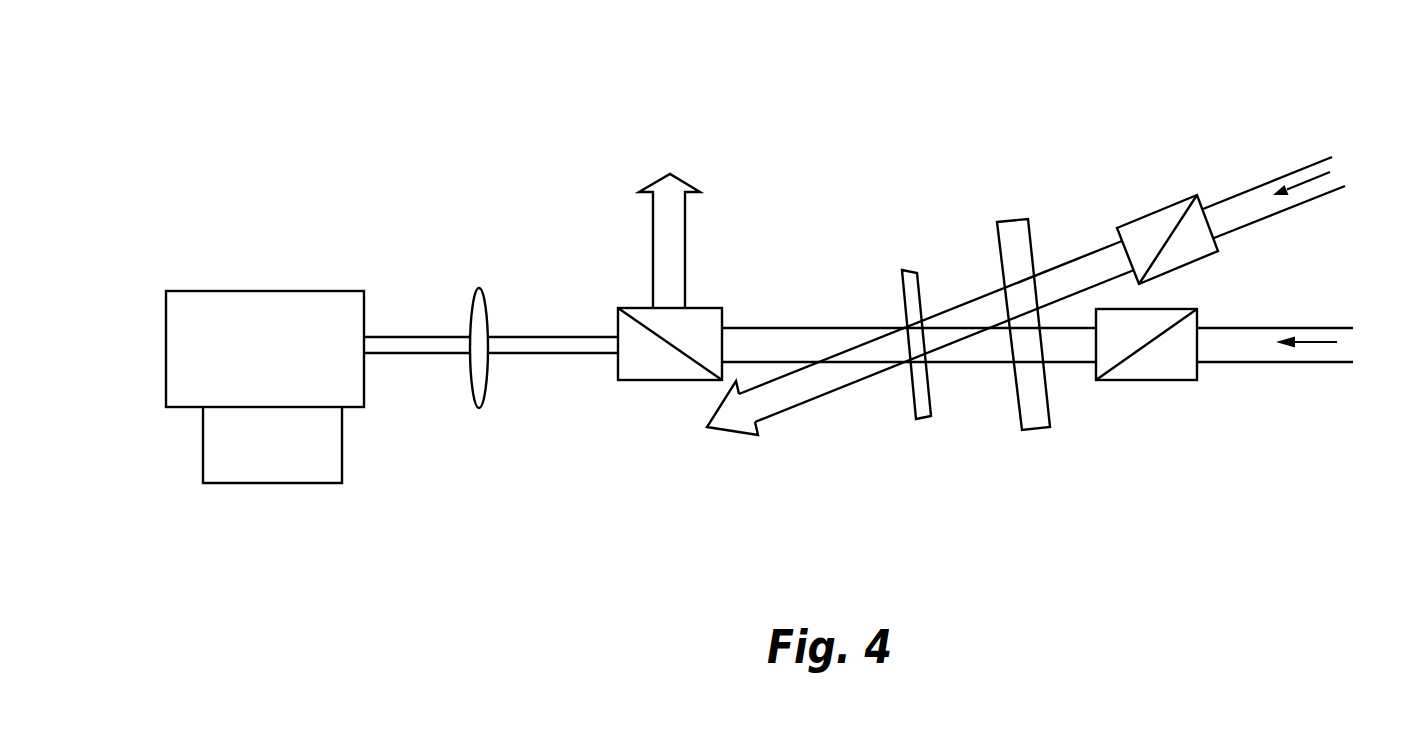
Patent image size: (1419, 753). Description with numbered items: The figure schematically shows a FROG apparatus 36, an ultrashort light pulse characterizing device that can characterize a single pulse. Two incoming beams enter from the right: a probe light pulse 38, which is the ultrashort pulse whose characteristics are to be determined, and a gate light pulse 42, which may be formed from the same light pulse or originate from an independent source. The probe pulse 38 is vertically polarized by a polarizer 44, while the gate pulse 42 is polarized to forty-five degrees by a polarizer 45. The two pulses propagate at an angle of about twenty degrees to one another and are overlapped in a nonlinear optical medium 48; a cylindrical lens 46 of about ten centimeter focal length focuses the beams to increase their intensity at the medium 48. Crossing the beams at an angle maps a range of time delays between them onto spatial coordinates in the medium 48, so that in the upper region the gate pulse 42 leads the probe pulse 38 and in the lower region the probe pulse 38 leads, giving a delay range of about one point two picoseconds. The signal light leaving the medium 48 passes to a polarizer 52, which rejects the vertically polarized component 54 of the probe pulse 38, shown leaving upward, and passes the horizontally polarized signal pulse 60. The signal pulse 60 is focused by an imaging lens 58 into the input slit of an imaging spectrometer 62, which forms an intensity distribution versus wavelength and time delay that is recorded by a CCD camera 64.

The FROG apparatus 36 is at (757, 92).
The probe light pulse 38 is at (1323, 323).
The gate light pulse 42 is at (1287, 175).
The polarizer 44 is at (1152, 315).
The polarizer 45 is at (1210, 200).
The cylindrical lens 46 is at (1035, 432).
The nonlinear optical medium 48 is at (911, 278).
The polarizer 52 is at (635, 373).
The rejected component of probe pulse 54 is at (662, 210).
The imaging lens 58 is at (483, 378).
The signal pulse 60 is at (568, 340).
The imaging spectrometer 62 is at (207, 296).
The CCD camera 64 is at (216, 476).